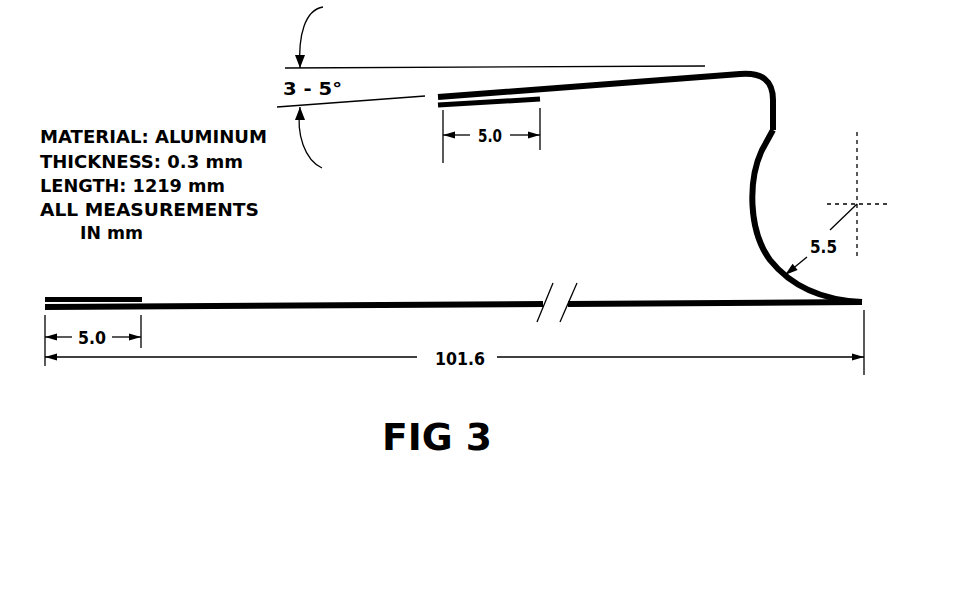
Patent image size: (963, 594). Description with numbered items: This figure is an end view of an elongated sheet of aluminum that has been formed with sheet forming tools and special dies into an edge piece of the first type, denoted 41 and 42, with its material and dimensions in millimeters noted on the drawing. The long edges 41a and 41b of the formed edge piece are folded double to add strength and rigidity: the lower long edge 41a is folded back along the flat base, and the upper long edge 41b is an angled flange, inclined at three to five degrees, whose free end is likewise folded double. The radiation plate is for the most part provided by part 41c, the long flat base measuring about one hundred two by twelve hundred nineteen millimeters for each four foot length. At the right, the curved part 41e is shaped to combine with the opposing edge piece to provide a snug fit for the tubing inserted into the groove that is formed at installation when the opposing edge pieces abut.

The edge piece 41 is at (455, 160).
The edge piece 42 is at (640, 55).
The long edge 41a is at (588, 88).
The long edge 41b is at (491, 92).
The radiation plate part 41c is at (430, 302).
The tubing-fitting part 41e is at (780, 195).